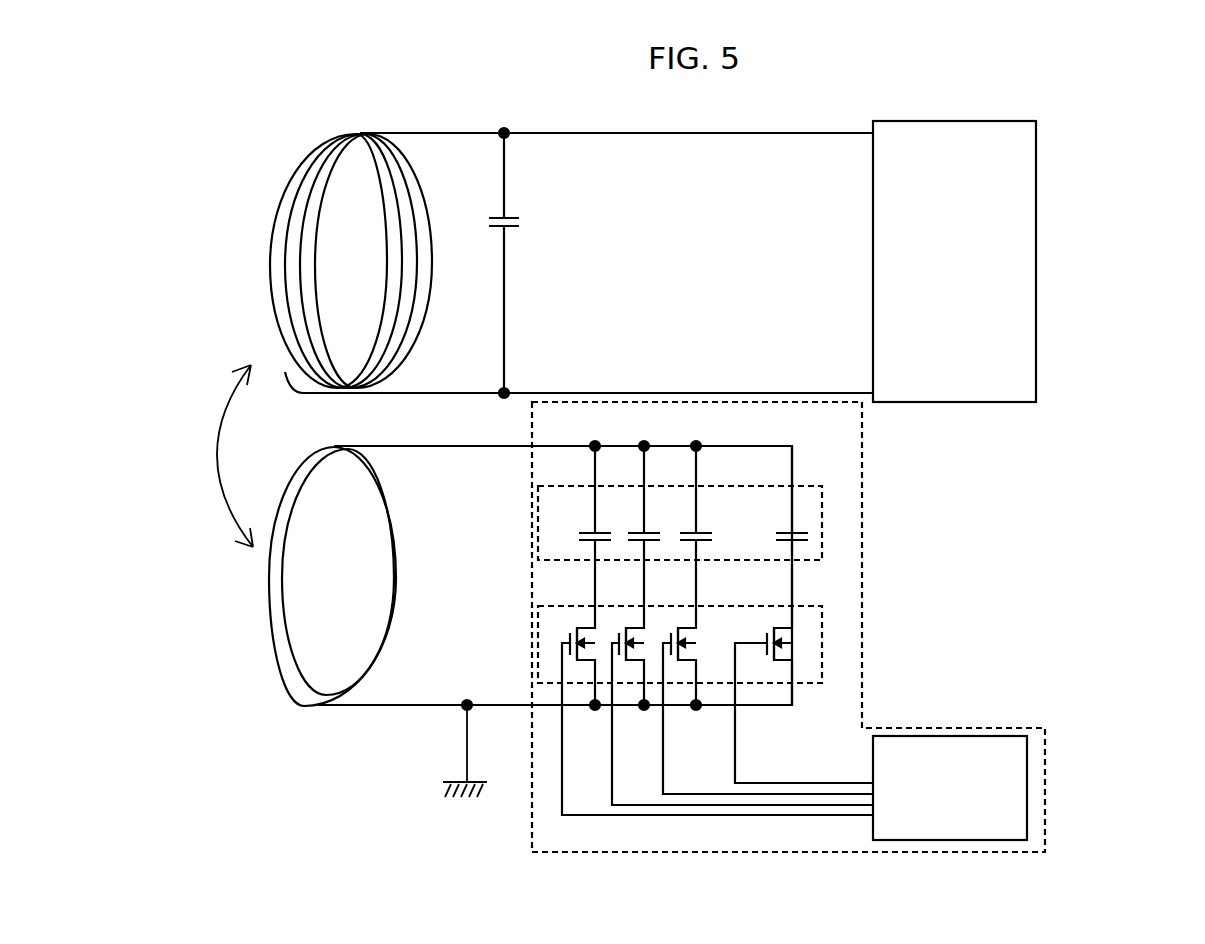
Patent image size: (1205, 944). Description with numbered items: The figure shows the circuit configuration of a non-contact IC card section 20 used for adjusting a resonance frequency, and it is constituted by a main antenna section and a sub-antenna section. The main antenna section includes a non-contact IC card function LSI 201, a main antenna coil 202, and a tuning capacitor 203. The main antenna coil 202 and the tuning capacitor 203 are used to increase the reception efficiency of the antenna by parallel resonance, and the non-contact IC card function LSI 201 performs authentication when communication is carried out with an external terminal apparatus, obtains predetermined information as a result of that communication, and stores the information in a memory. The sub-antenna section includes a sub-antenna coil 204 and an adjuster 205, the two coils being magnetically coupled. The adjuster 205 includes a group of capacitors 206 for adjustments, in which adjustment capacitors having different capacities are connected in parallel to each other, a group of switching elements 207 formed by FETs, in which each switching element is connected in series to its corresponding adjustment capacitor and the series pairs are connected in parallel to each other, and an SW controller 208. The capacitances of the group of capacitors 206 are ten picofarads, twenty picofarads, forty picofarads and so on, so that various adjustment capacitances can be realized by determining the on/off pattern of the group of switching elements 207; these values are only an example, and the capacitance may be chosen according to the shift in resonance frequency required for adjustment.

The non-contact IC card section 20 is at (1149, 156).
The non-contact IC card function LSI 201 is at (998, 402).
The main antenna coil 202 is at (292, 177).
The tuning capacitor 203 is at (518, 216).
The sub-antenna coil 204 is at (279, 676).
The adjuster 205 is at (862, 452).
The group of capacitors 206 is at (822, 524).
The group of switching elements 207 is at (822, 645).
The SW controller 208 is at (990, 736).